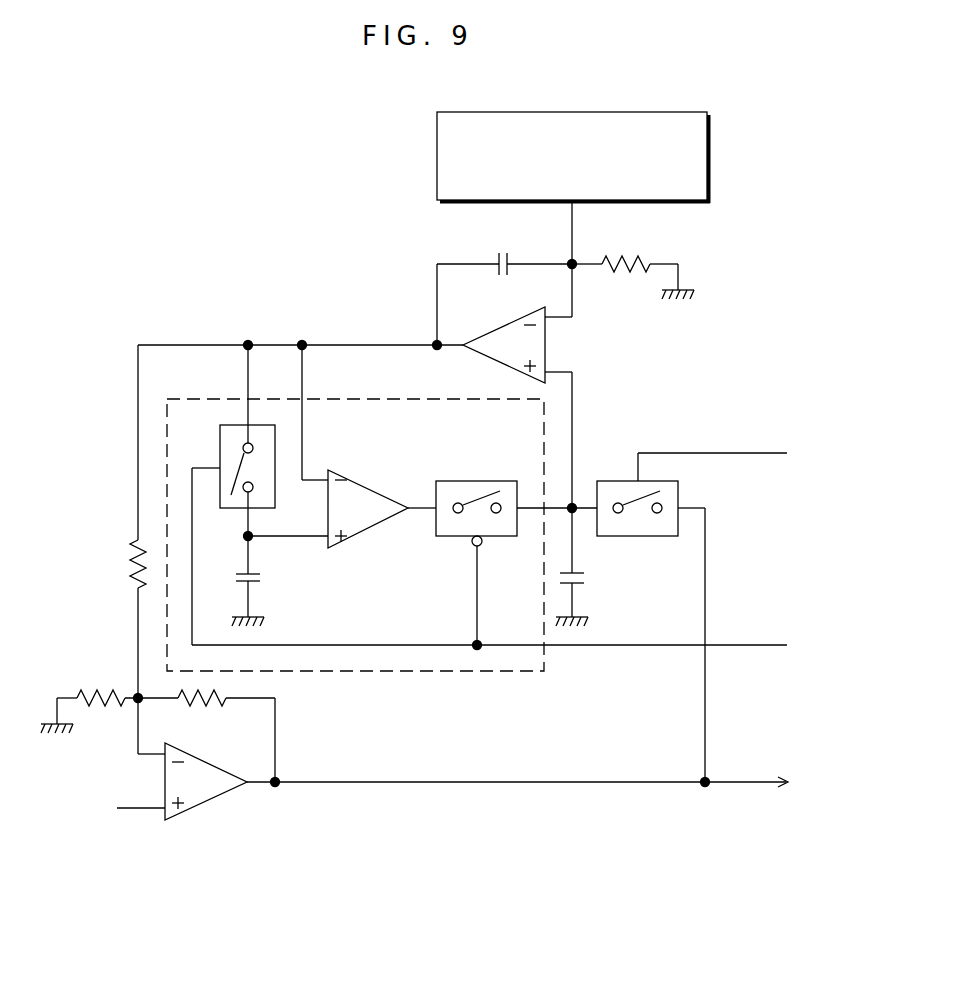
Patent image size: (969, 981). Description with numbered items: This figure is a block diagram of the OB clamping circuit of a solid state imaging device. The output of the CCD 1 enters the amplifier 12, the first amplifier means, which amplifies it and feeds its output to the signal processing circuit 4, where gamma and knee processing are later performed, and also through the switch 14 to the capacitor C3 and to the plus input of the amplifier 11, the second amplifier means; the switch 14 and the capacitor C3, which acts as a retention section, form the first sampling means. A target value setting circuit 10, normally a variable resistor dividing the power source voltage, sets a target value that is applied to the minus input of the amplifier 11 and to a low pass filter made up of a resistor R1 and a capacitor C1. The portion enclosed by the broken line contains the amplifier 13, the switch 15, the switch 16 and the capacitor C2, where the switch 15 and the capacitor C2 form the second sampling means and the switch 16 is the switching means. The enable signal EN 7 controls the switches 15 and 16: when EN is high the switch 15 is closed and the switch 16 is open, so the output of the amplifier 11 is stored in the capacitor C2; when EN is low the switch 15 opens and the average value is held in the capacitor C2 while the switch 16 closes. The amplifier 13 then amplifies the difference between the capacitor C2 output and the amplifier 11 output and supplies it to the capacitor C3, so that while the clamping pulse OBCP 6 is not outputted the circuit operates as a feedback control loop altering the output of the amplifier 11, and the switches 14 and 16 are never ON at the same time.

The target value setting circuit 10 is at (437, 120).
The amplifier 11 is at (500, 330).
The amplifier 12 is at (216, 795).
The amplifier 13 is at (378, 498).
The switch 14 is at (618, 478).
The switch 15 is at (219, 447).
The switch 16 is at (485, 479).
The capacitor C1 is at (504, 250).
The capacitor C2 is at (267, 582).
The capacitor C3 is at (591, 582).
The resistor R1 is at (633, 262).
The CCD 1 is at (100, 808).
The signal processing circuit 4 is at (752, 823).
The optical black clamping pulse signal (OBCP) 6 is at (725, 438).
The enable signal (EN) 7 is at (752, 631).